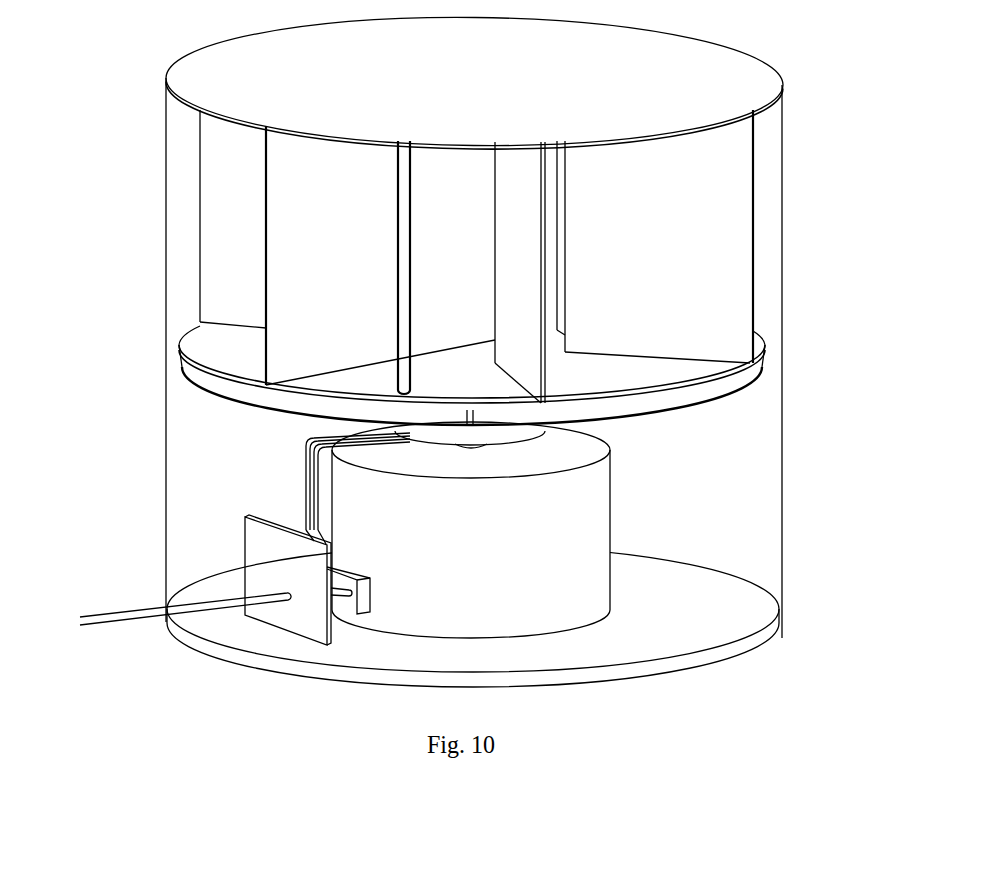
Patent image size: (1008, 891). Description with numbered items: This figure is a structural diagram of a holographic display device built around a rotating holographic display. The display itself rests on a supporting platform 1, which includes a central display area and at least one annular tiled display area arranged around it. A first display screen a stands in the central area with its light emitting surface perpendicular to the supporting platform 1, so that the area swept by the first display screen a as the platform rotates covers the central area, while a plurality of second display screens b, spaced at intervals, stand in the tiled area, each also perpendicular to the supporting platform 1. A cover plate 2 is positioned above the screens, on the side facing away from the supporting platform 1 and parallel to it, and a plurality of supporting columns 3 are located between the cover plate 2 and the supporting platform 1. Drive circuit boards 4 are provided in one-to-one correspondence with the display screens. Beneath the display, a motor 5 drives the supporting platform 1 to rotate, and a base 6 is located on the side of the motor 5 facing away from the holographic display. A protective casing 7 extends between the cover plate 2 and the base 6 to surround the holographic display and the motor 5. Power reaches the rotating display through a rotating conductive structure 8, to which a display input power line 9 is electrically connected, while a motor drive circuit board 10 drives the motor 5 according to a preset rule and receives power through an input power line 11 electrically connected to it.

The supporting platform 1 is at (183, 343).
The cover plate 2 is at (672, 108).
The supporting columns 3 is at (400, 181).
The drive circuit boards 4 is at (700, 407).
The motor 5 is at (522, 537).
The base 6 is at (672, 621).
The protective casing 7 is at (158, 407).
The rotating conductive structure 8 is at (545, 437).
The display input power line 9 is at (300, 462).
The motor drive circuit board 10 is at (262, 557).
The input power line 11 is at (78, 611).
The first display screen a is at (460, 267).
The second display screens b is at (670, 340).